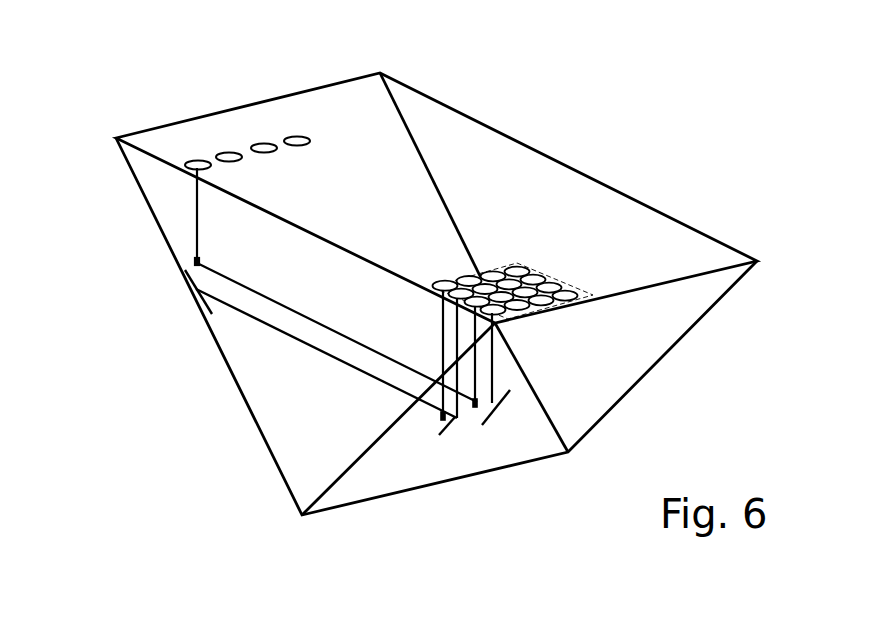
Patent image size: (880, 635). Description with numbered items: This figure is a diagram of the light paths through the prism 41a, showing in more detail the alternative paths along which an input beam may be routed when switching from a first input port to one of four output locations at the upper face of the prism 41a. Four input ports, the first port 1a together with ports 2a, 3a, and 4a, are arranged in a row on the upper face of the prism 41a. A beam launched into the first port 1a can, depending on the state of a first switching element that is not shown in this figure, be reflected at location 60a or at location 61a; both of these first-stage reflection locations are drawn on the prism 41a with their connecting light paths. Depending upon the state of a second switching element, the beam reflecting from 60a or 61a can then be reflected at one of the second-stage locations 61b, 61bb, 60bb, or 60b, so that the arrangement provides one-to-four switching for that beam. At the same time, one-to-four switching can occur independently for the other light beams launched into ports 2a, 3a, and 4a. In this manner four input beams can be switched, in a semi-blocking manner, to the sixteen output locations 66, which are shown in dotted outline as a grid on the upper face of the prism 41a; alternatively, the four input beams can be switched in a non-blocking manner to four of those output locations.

The first port 1a is at (195, 163).
The port 2a is at (228, 153).
The port 3a is at (262, 143).
The port 4a is at (293, 137).
The prism 41a is at (313, 458).
The reflection location 60a is at (197, 263).
The reflection location 61a is at (200, 293).
The output locations 66 is at (542, 267).
The reflection location 60b is at (500, 392).
The reflection location 60bb is at (500, 407).
The reflection location 61b is at (441, 422).
The reflection location 61bb is at (455, 420).